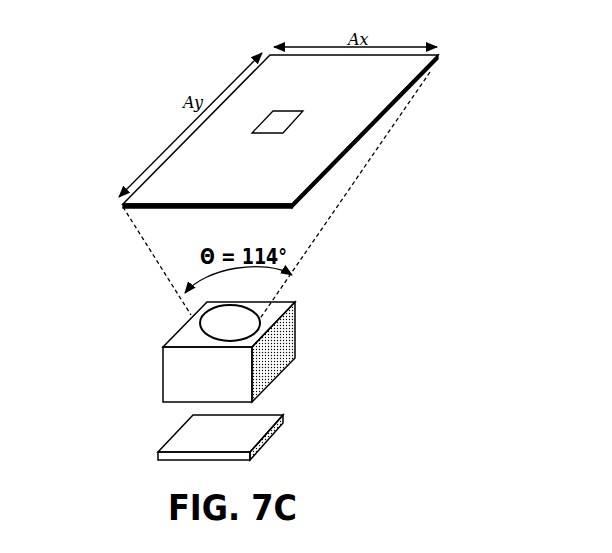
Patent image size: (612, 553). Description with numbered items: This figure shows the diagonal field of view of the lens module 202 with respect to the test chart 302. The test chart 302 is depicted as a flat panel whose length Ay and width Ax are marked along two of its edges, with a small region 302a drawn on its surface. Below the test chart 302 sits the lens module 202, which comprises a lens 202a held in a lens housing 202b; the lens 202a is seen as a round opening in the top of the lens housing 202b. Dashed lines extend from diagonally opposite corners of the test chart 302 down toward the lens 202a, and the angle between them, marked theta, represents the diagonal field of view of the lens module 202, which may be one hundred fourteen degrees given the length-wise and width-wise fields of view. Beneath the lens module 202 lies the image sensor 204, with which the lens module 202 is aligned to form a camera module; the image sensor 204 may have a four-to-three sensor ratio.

The test chart 302 is at (390, 82).
The aperture in display panel 302a is at (270, 122).
The lens module 202 is at (215, 338).
The lens 202a is at (225, 317).
The lens housing 202b is at (280, 352).
The image sensor 204 is at (284, 423).